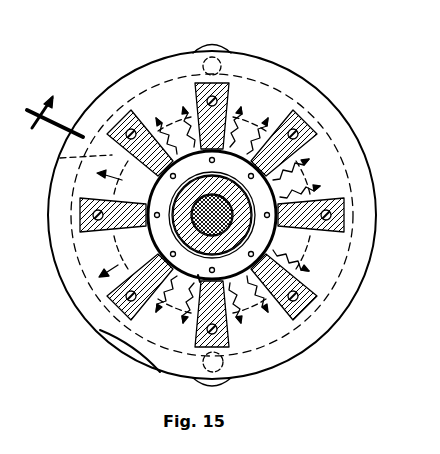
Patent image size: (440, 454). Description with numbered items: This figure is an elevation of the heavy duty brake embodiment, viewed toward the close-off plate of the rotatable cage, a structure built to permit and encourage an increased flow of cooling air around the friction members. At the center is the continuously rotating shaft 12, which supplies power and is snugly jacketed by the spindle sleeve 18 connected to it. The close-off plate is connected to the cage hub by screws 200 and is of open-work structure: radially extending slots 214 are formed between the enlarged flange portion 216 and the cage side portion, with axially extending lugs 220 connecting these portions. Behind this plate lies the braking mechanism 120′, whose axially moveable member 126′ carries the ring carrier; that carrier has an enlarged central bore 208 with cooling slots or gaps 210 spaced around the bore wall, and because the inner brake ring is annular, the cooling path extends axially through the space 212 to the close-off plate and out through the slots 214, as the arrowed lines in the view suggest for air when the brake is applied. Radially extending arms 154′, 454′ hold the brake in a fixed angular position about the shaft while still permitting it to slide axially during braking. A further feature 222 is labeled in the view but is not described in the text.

The shaft 12 is at (214, 206).
The spindle sleeve 18 is at (238, 252).
The braking mechanism 120′ is at (205, 382).
The axially moveable member 126′ is at (214, 45).
The radially extending arms 154′ is at (147, 65).
The lower port 454′ is at (247, 372).
The screw 200 is at (152, 130).
The enlarged central bore 208 is at (148, 200).
The cooling slots 210 is at (48, 160).
The space 212 is at (117, 241).
The radially extending slots 214 is at (146, 102).
The enlarged flange portion 216 is at (290, 72).
The axially extending lugs 220 is at (278, 135).
The inner dashed contour 222 is at (297, 180).